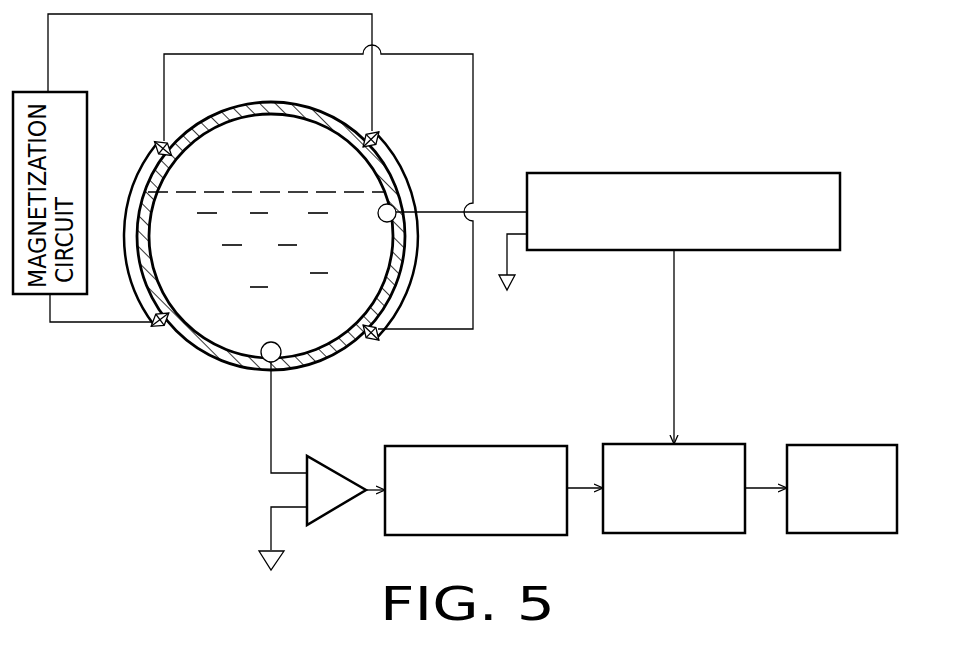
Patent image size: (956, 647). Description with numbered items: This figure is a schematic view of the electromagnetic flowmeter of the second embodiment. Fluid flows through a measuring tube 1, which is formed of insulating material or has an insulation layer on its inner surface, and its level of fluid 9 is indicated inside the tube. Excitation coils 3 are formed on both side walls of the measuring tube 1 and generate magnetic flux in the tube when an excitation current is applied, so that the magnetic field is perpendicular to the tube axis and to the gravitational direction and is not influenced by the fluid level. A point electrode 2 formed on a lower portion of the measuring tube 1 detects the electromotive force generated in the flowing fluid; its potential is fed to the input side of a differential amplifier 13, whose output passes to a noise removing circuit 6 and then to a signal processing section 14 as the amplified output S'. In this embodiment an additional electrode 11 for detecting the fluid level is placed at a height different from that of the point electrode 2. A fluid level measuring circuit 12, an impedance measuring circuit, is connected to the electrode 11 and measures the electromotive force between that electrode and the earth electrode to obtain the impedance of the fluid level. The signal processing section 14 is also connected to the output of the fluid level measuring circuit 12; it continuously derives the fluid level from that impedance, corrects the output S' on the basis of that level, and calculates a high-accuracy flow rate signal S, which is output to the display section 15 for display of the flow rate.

The measuring tube 1 is at (295, 101).
The point electrode 2 is at (276, 343).
The excitation coils 3 is at (143, 167).
The noise removing circuit 6 is at (488, 446).
The level of fluid 9 is at (262, 190).
The electrode for detecting a fluid level 11 is at (392, 206).
The fluid level measuring circuit 12 is at (702, 173).
The differential amplifier 13 is at (340, 470).
The signal processing section 14 is at (712, 444).
The display section 15 is at (845, 445).